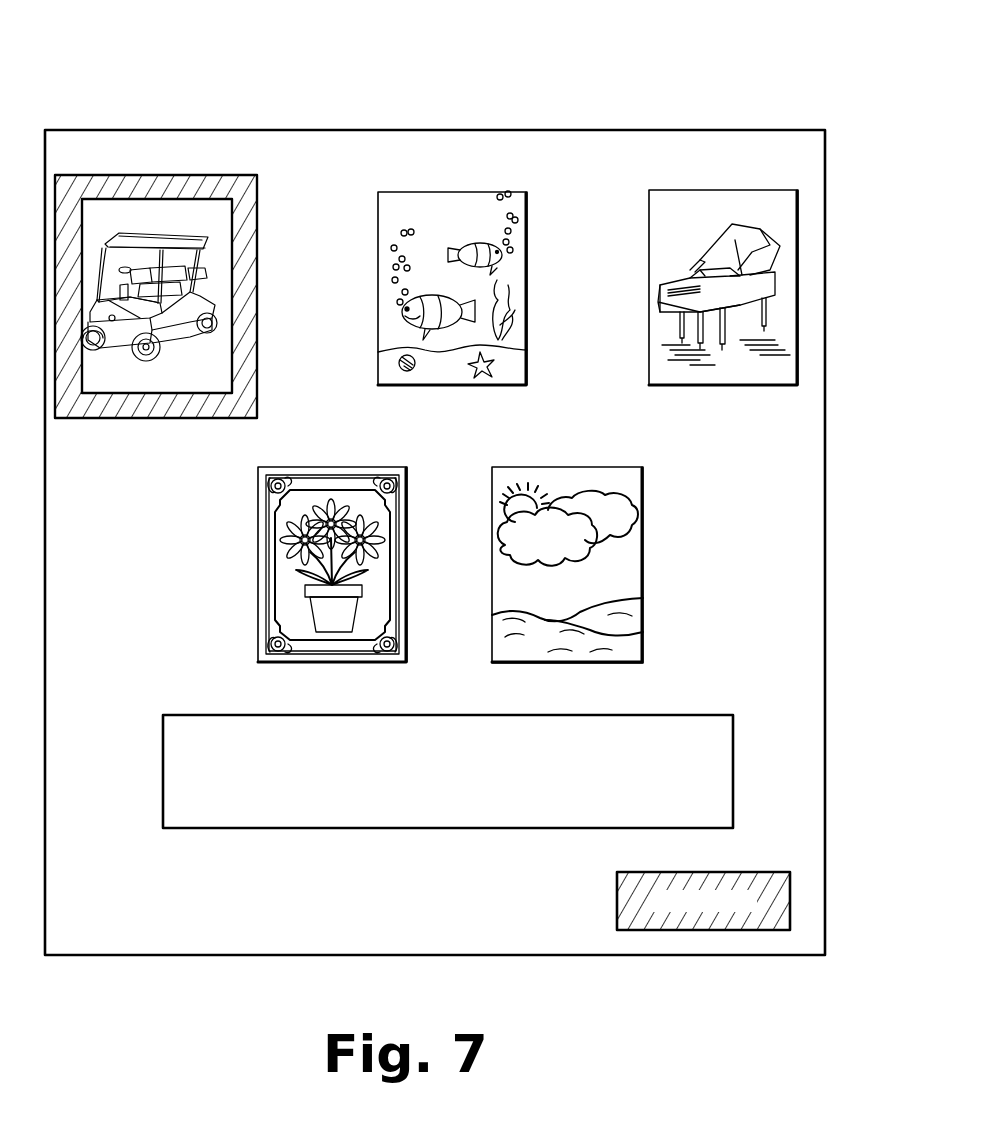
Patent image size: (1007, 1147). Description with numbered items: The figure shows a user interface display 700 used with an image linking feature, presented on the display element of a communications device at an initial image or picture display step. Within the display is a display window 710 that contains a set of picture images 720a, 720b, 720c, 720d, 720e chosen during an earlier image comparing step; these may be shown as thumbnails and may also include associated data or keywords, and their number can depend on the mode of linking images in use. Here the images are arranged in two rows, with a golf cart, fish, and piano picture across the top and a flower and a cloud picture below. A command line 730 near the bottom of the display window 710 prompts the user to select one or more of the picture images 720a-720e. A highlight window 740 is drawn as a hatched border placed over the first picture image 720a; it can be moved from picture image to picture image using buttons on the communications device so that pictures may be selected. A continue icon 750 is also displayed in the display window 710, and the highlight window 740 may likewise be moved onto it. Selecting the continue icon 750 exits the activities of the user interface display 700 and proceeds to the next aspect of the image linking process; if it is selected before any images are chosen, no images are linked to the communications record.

The user interface display 700 is at (744, 82).
The display window 710 is at (83, 130).
The picture image 720a is at (230, 254).
The picture image 720b is at (528, 213).
The picture image 720c is at (649, 318).
The picture image 720d is at (258, 557).
The picture image 720e is at (644, 490).
The command line 730 is at (163, 748).
The highlight window 740 is at (123, 420).
The continue icon 750 is at (617, 888).